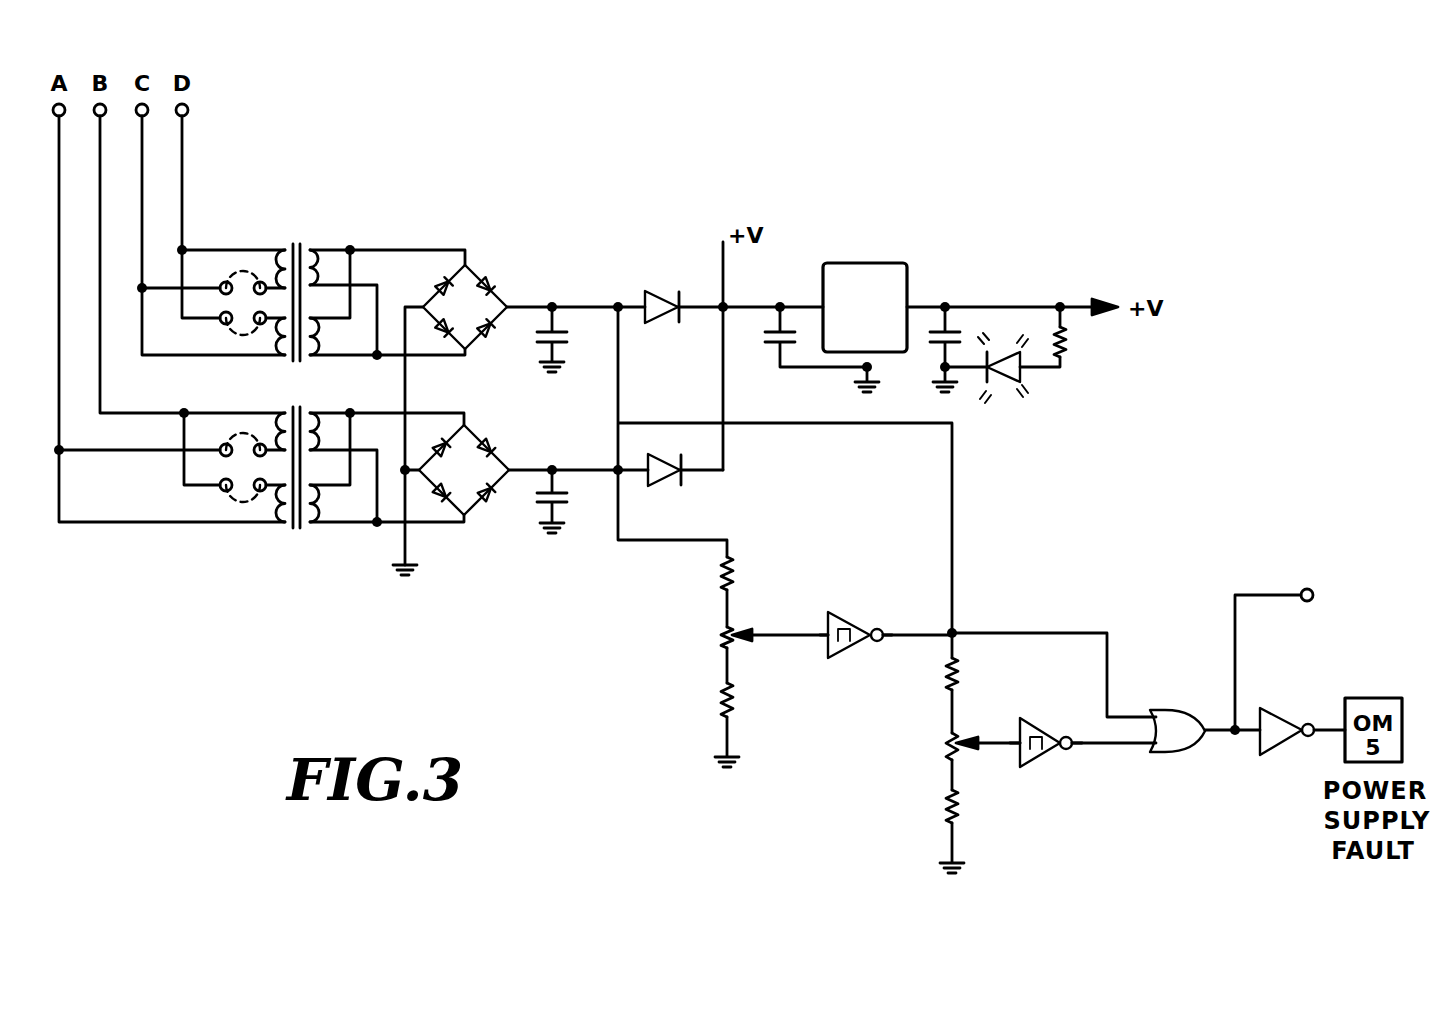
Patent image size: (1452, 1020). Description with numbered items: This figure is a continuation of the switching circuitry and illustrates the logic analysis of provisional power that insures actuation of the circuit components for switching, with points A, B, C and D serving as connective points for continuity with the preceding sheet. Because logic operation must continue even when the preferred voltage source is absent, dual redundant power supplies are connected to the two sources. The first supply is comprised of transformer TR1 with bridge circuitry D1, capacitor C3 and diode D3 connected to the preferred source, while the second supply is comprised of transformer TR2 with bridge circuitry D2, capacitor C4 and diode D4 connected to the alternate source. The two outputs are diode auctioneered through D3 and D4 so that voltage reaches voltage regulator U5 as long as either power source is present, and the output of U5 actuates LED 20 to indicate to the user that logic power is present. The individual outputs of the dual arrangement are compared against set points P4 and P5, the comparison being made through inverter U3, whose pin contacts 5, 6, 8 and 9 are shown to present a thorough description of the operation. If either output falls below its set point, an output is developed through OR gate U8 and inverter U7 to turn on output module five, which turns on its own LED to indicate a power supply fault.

The LED 20 is at (1022, 383).
The transformer TR1 is at (271, 286).
The transformer TR2 is at (277, 484).
The bridge circuitry D1 is at (478, 300).
The bridge circuitry D2 is at (479, 468).
The diode D3 is at (659, 288).
The diode D4 is at (666, 453).
The capacitor C3 is at (575, 339).
The capacitor C4 is at (575, 501).
The voltage regulator U5 is at (865, 307).
The inverter U3 is at (950, 672).
The OR gate U8 is at (1177, 713).
The inverter U7 is at (1287, 715).
The set point P4 is at (717, 662).
The set point P5 is at (938, 753).
The pin contact 5 is at (820, 649).
The pin contact 6 is at (877, 651).
The pin contact 8 is at (1068, 757).
The pin contact 9 is at (1010, 730).